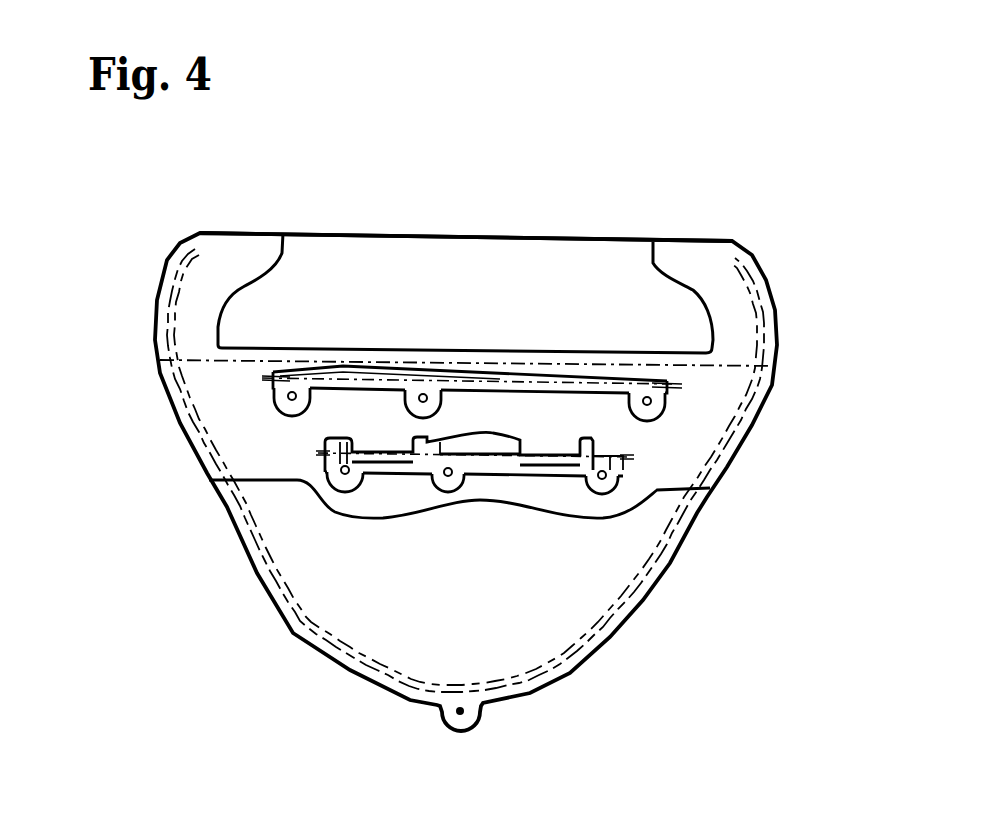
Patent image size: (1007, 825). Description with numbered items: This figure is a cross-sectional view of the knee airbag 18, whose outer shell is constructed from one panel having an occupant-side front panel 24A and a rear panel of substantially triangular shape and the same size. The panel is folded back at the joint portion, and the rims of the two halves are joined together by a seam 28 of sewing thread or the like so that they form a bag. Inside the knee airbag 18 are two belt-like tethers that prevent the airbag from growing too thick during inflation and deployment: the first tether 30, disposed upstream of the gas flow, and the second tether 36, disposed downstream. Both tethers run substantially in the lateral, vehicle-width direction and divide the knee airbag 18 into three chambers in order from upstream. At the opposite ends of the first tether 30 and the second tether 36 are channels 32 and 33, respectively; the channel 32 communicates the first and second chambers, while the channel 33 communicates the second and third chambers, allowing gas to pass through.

The knee airbag 18 is at (455, 185).
The front panel 24A is at (633, 240).
The seam 28 is at (275, 580).
The first tether 30 is at (542, 476).
The channel 32 is at (282, 463).
The channel 33 is at (232, 389).
The second tether 36 is at (520, 382).